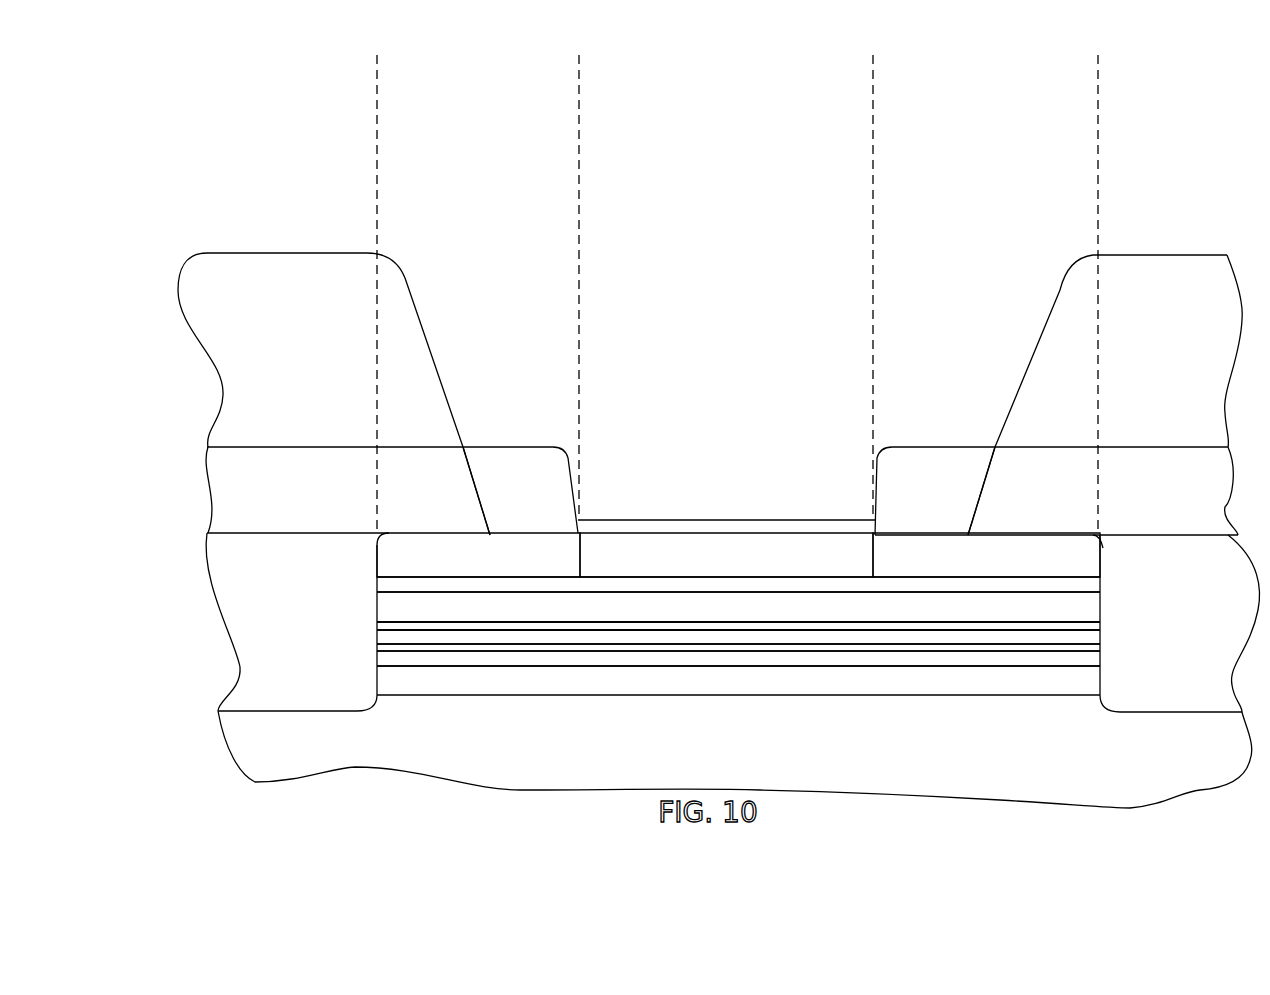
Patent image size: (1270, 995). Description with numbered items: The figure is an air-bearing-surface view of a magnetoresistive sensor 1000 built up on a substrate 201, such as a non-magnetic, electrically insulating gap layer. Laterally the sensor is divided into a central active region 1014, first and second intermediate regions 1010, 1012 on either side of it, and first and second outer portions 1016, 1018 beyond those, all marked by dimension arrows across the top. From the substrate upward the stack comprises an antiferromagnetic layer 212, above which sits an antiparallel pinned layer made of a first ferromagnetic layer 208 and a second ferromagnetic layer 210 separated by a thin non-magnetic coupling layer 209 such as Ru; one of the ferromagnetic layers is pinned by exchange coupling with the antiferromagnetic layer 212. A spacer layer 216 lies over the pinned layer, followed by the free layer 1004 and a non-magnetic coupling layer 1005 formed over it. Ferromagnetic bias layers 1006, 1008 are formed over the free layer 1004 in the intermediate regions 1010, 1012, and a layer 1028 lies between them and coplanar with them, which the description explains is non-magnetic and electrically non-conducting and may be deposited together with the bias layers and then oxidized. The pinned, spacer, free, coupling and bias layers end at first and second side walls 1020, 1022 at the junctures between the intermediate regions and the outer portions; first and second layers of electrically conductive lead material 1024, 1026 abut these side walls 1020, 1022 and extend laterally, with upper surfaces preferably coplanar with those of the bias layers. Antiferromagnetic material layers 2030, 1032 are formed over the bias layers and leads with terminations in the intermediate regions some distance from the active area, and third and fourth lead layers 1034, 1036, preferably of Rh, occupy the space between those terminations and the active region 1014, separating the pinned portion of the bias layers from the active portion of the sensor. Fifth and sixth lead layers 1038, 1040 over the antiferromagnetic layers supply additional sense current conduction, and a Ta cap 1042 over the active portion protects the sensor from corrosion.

The magnetoresistive sensor 1000 is at (1052, 824).
The first outer portion 1016 is at (203, 69).
The first intermediate region 1010 is at (578, 69).
The active region 1014 is at (871, 69).
The second intermediate region 1012 is at (1096, 69).
The second outer portion 1018 is at (1267, 69).
The fifth lead layer 1038 is at (308, 416).
The second antiferromagnetic material layer 1032 is at (458, 492).
The first layer of electrically conductive lead material 1024 is at (322, 572).
The third lead layer 1034 is at (496, 457).
The fourth lead layer 1036 is at (962, 472).
The sixth lead layer 1040 is at (1125, 397).
The first antiferromagnetic material layer 2030 is at (1190, 472).
The second layer of electrically conductive lead material 1026 is at (1198, 622).
The second side wall 1022 is at (1108, 547).
The Ta cap 1042 is at (703, 520).
The first ferromagnetic bias layer 1006 is at (535, 565).
The center layer 1028 is at (718, 553).
The second ferromagnetic bias layer 1008 is at (1020, 568).
The non-magnetic coupling layer 1005 is at (1093, 587).
The free layer 1004 is at (1093, 608).
The spacer layer 216 is at (1097, 626).
The first side wall 1020 is at (372, 626).
The second ferromagnetic layer 210 is at (385, 637).
The non-magnetic coupling layer 209 is at (383, 648).
The first ferromagnetic layer 208 is at (383, 662).
The third layer of antiferromagnetic material 212 is at (405, 686).
The substrate 201 is at (762, 745).